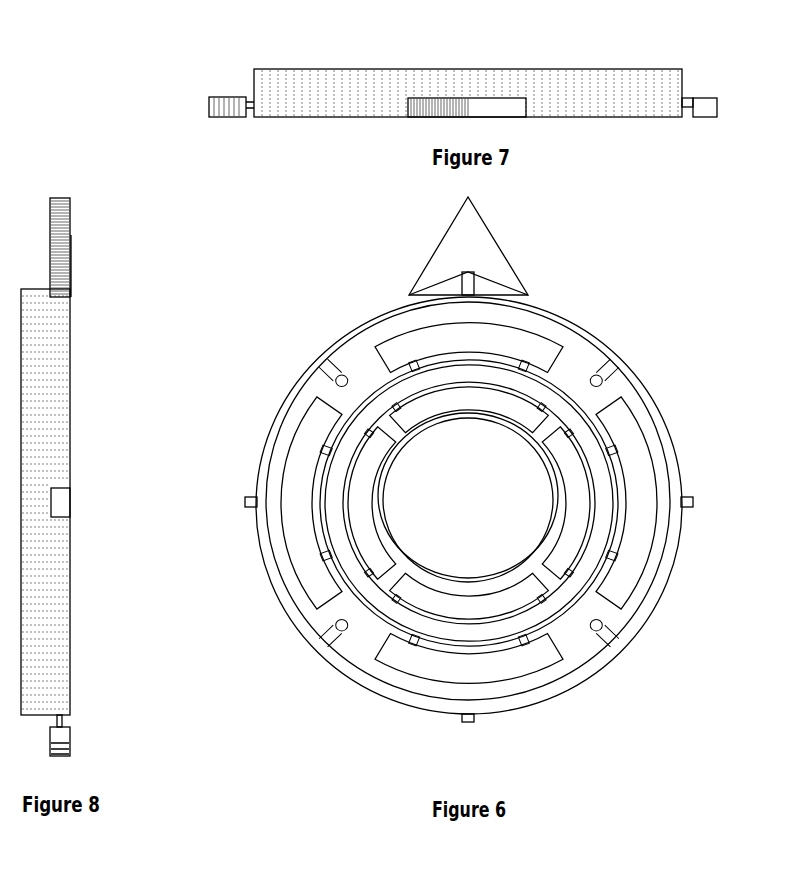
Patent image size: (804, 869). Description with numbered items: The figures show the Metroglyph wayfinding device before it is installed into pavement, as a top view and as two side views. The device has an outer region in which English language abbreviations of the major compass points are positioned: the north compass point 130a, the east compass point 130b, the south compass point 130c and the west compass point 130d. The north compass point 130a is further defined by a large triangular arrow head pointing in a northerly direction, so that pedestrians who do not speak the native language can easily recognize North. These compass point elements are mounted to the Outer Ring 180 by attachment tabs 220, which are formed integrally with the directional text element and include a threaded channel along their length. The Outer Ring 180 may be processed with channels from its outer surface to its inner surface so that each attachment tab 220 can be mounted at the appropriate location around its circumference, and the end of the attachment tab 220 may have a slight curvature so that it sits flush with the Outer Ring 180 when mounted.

In FIG. 7, the Outer Ring 180 is at (592, 90).
In FIG. 8, the Outer Ring 180 is at (48, 643).
In FIG. 6, the Outer Ring 180 is at (670, 565).
In FIG. 7, the north compass point 130a is at (490, 103).
In FIG. 8, the north compass point 130a is at (58, 268).
In FIG. 6, the north compass point 130a is at (490, 248).
In FIG. 7, the east compass point 130b is at (707, 113).
In FIG. 6, the east compass point 130b is at (700, 488).
In FIG. 8, the south compass point 130c is at (62, 737).
In FIG. 6, the south compass point 130c is at (483, 743).
In FIG. 7, the west compass point 130d is at (209, 106).
In FIG. 8, the west compass point 130d is at (65, 503).
In FIG. 6, the west compass point 130d is at (210, 502).
In FIG. 7, the attachment tab 220 is at (686, 105).
In FIG. 8, the attachment tab 220 is at (60, 718).
In FIG. 6, the attachment tab 220 is at (470, 283).